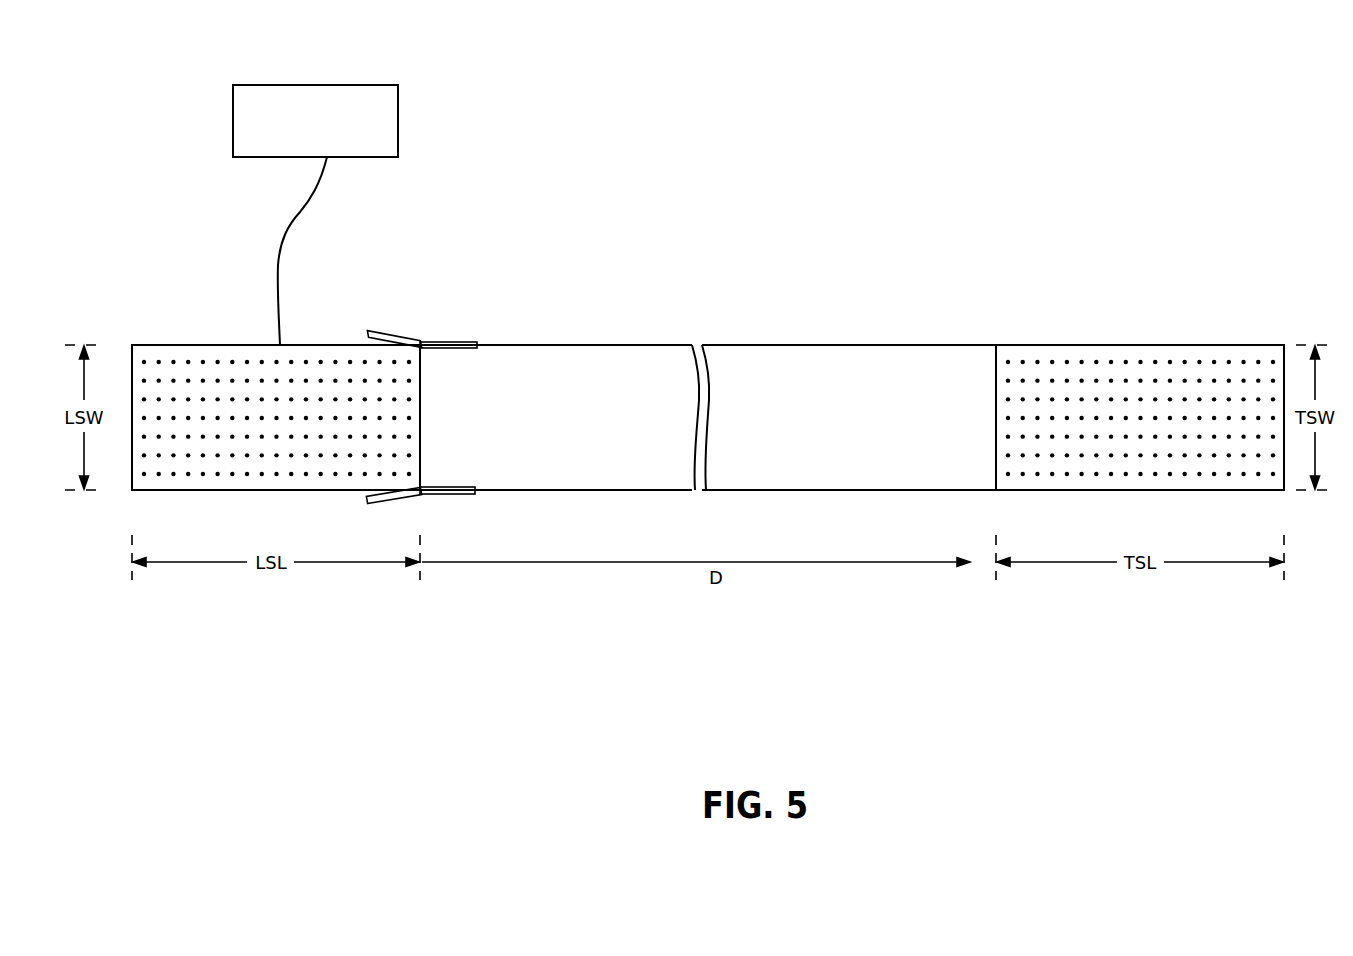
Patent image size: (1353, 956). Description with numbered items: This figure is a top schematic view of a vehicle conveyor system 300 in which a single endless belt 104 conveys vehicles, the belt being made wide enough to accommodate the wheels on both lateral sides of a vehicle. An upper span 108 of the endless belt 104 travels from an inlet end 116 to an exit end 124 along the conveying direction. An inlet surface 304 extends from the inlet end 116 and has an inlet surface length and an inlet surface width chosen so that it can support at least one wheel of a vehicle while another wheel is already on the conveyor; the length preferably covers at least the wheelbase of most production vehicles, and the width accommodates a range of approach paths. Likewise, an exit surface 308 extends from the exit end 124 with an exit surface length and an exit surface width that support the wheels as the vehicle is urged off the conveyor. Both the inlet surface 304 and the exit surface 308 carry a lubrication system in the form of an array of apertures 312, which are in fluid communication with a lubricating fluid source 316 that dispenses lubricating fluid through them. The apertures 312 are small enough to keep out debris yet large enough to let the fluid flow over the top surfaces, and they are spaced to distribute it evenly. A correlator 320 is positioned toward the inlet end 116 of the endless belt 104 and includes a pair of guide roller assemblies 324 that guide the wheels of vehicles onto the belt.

The endless belt 104 is at (584, 358).
The upper span 108 is at (653, 420).
The inlet end 116 is at (476, 390).
The exit end 124 is at (948, 392).
The vehicle conveyor system 300 is at (537, 172).
The inlet surface 304 is at (172, 358).
The exit surface 308 is at (1242, 358).
The apertures 312 is at (217, 382).
The lubricating fluid source 316 is at (299, 133).
The correlator 320 is at (390, 268).
The guide roller assemblies 324 is at (390, 332).